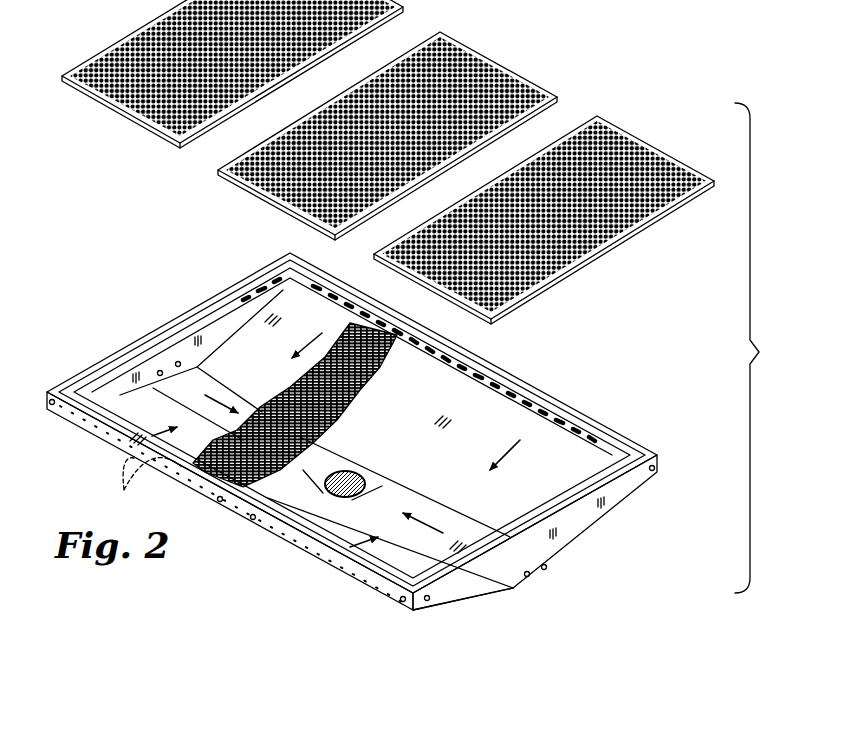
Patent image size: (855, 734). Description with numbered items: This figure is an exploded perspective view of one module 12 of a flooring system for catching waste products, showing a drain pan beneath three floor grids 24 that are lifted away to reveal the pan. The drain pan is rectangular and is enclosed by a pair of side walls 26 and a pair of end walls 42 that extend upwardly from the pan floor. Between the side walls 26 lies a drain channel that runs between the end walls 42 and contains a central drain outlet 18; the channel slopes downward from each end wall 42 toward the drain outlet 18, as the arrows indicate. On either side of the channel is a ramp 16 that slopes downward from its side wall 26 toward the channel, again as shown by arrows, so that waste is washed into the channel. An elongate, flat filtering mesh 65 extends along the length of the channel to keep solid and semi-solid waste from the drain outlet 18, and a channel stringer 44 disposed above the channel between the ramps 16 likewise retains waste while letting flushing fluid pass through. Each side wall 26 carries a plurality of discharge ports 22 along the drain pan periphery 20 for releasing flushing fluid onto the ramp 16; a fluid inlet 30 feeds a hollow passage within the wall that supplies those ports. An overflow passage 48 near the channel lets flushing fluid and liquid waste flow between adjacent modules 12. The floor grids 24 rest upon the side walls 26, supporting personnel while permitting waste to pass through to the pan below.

The module 12 is at (767, 348).
The ramp 16 is at (283, 297).
The drain outlet 18 is at (330, 490).
The drain pan periphery 20 is at (490, 365).
The discharge port 22 is at (560, 374).
The floor grid 24 is at (124, 118).
The side wall 26 is at (307, 570).
The fluid inlet 30 is at (52, 405).
The end wall 42 is at (226, 314).
The channel stringer 44 is at (168, 392).
The overflow passage 48 is at (178, 362).
The filtering mesh 65 is at (188, 493).